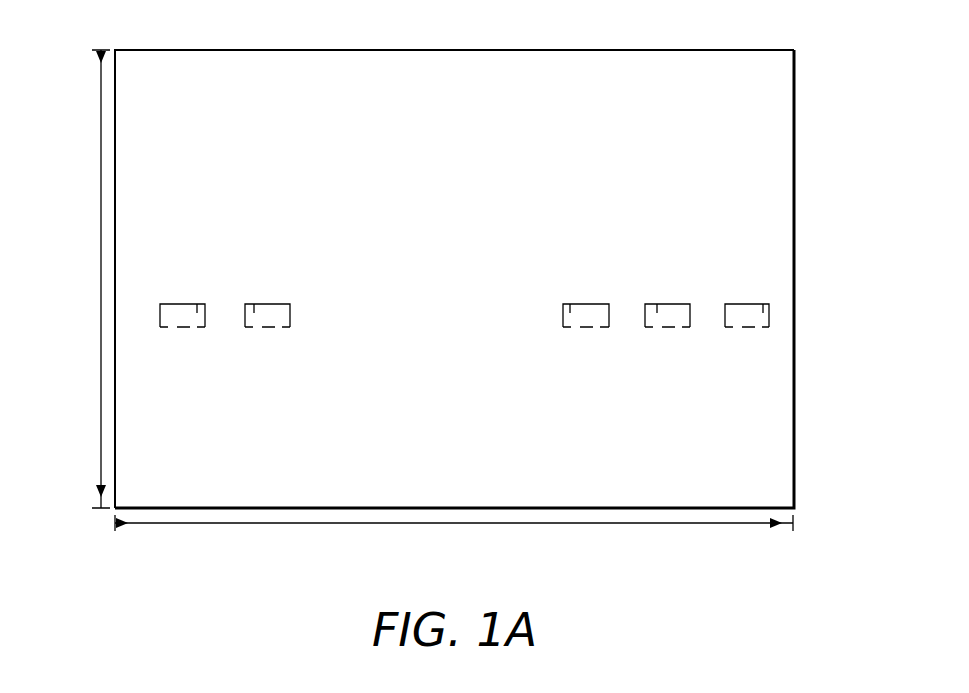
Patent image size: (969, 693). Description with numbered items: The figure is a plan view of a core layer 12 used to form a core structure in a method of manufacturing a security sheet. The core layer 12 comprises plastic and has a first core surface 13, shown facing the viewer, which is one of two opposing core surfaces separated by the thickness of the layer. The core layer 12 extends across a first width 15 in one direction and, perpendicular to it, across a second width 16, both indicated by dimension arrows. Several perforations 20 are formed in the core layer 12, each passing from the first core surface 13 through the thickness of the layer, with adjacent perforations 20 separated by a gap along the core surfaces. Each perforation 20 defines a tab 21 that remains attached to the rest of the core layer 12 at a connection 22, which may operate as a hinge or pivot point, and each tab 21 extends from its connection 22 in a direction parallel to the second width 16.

The core layer 12 is at (796, 141).
The first core surface 13 is at (778, 441).
The first width 15 is at (457, 523).
The second width 16 is at (100, 275).
The perforation 20 is at (175, 304).
The tab 21 is at (254, 304).
The connection 22 is at (186, 330).